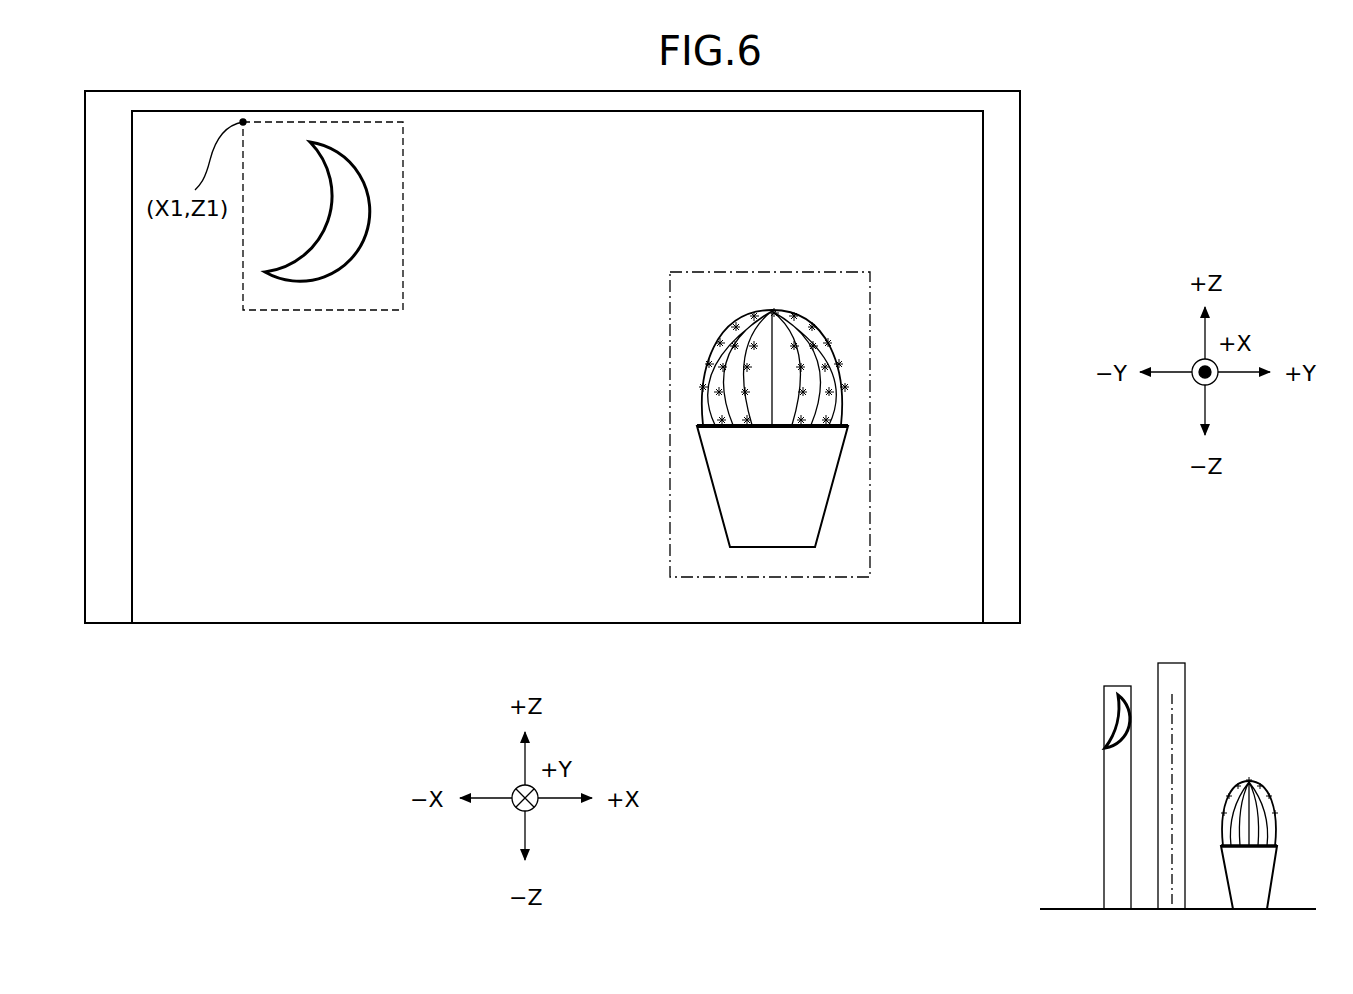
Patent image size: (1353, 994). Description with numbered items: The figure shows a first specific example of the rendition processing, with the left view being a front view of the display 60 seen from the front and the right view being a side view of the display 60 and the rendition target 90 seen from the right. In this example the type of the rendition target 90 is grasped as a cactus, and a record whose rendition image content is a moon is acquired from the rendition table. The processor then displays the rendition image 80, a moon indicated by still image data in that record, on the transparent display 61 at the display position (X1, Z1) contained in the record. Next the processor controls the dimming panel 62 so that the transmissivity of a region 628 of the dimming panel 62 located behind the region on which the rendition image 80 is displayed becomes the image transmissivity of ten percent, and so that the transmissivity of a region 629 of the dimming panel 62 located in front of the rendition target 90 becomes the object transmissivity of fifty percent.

The display 60 is at (1137, 665).
The transparent display 61 is at (973, 143).
The dimming panel 62 is at (1010, 188).
The region 628 is at (330, 310).
The region 629 is at (823, 272).
The rendition image 80 is at (310, 262).
The rendition target 90 is at (765, 530).